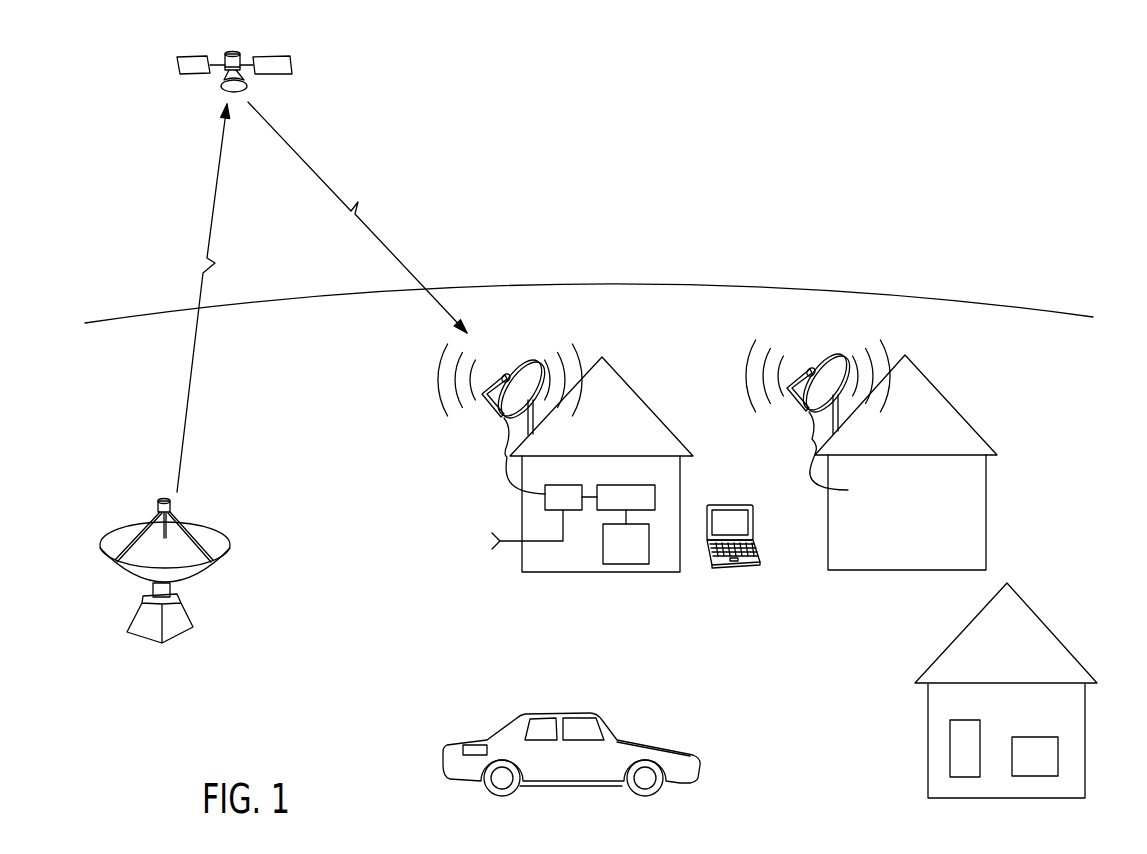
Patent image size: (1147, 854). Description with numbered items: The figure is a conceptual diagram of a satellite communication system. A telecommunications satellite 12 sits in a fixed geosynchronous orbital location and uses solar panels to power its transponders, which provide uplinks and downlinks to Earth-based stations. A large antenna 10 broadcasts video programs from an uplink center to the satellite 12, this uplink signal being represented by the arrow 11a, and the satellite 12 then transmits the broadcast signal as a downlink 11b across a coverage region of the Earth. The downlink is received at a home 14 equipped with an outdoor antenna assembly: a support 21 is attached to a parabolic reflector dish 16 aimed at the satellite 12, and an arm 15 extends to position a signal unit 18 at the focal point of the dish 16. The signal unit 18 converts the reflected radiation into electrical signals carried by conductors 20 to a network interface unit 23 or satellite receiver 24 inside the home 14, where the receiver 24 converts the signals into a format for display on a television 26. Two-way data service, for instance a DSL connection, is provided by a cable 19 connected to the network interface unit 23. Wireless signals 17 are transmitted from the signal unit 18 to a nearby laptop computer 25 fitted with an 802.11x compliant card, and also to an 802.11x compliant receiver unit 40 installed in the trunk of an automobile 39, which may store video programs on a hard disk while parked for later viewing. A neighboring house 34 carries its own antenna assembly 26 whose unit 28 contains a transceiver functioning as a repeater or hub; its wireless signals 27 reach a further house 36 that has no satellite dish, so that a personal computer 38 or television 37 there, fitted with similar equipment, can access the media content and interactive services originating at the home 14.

The large antenna 10 is at (115, 576).
The uplink signal 11a is at (202, 244).
The downlink 11b is at (324, 183).
The telecommunications satellite 12 is at (243, 54).
The home 14 is at (581, 482).
The arm 15 is at (488, 404).
The reflector dish 16 is at (536, 362).
The wireless signals 17 is at (438, 406).
The signal unit 18 is at (505, 373).
The cable 19 is at (509, 543).
The conductors 20 is at (505, 470).
The support 21 is at (536, 418).
The network interface unit 23 is at (562, 485).
The satellite receiver 24 is at (626, 485).
The laptop computer 25 is at (735, 567).
The television / antenna assembly 26 is at (667, 540).
The wireless signals 27 is at (740, 358).
The unit 28 is at (810, 367).
The neighboring house 34 is at (987, 506).
The house 36 is at (1022, 690).
The television 37 is at (1037, 737).
The personal computer 38 is at (967, 720).
The automobile 39 is at (565, 754).
The receiver unit 40 is at (472, 746).